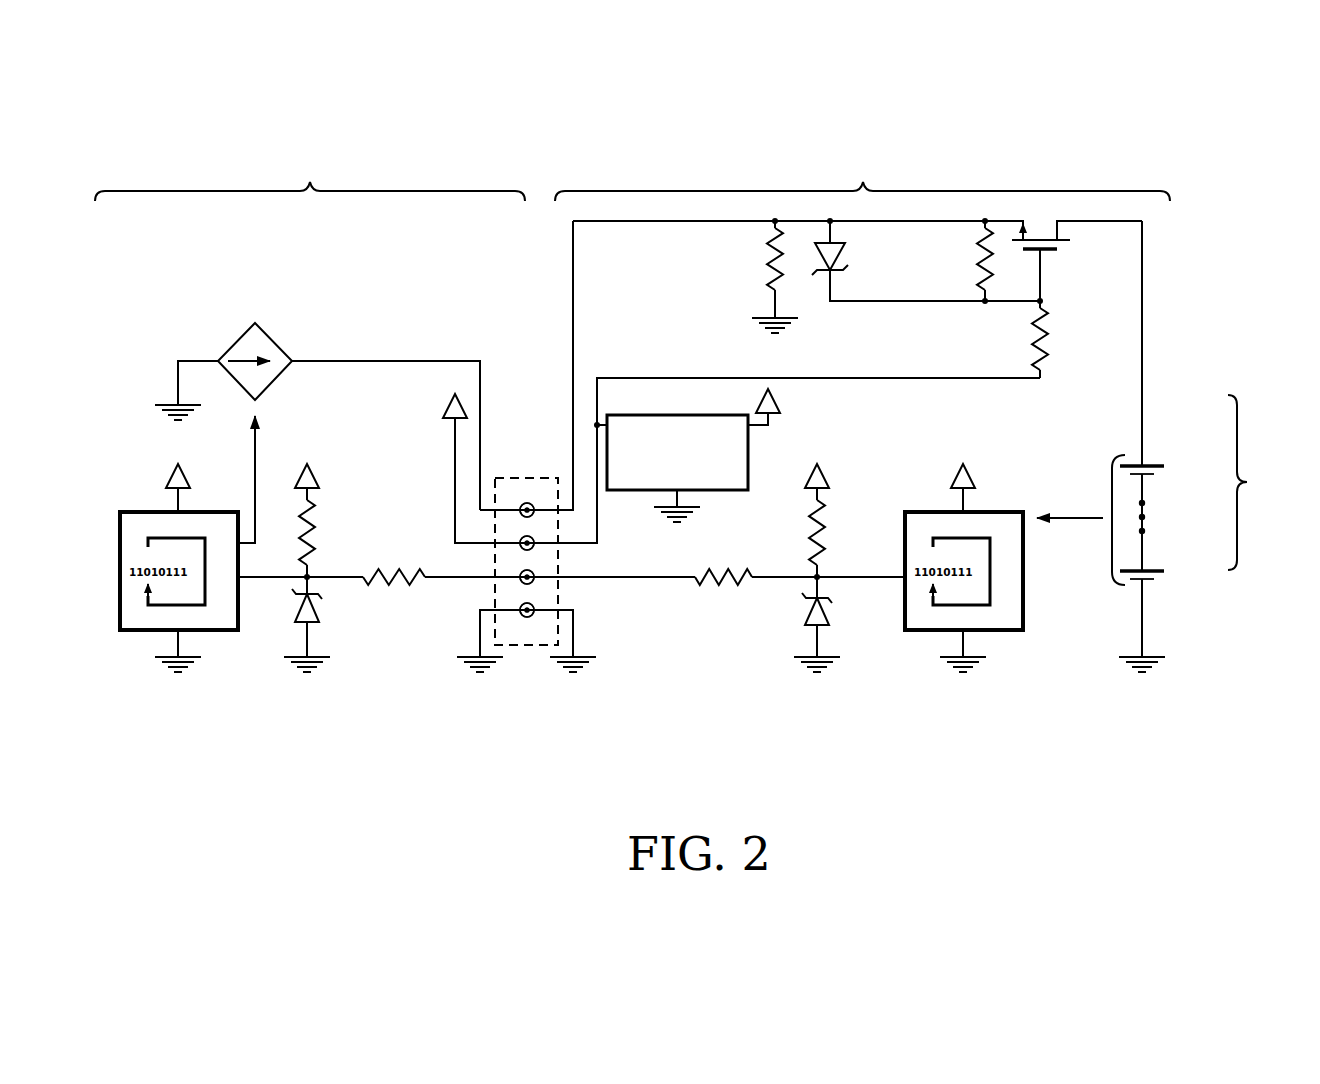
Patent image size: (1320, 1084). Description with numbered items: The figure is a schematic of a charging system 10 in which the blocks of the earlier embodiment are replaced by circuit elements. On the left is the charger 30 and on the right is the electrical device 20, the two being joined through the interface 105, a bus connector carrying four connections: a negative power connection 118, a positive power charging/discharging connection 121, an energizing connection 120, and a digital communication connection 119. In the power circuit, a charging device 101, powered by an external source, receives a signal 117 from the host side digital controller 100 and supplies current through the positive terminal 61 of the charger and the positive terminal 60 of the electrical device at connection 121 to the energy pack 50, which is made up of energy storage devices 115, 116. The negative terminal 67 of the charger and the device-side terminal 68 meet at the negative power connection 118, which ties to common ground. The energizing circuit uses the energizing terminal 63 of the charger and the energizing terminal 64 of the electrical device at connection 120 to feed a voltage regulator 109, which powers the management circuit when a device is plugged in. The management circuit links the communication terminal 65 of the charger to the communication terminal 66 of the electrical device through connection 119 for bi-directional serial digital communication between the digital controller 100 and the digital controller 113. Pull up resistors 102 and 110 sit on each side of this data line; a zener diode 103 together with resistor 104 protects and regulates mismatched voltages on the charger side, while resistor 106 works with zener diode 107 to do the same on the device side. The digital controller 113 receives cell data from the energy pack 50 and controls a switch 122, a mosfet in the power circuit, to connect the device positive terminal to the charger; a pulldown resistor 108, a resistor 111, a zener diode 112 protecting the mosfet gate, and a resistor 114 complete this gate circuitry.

The charging system 10 is at (418, 718).
The electrical device 20 is at (862, 175).
The charger 30 is at (310, 175).
The energy pack 50 is at (1199, 490).
The positive terminal of the electrical device 60 is at (541, 500).
The positive terminal of the charger 61 is at (513, 500).
The energizing terminal of the charger 63 is at (511, 540).
The energizing terminal of the electrical device 64 is at (548, 545).
The communication terminal of the charger 65 is at (511, 575).
The communication terminal of the electrical device 66 is at (546, 578).
The negative terminal of the charger 67 is at (511, 608).
The connector contact 68 is at (542, 607).
The host side digital controller 100 is at (202, 643).
The charging device 101 is at (292, 329).
The pull up resistor 102 is at (337, 513).
The zener diode 103 is at (337, 631).
The resistor 104 is at (388, 602).
The interface 105 is at (527, 415).
The resistor 106 is at (718, 551).
The zener diode 107 is at (792, 630).
The pulldown resistor 108 is at (751, 265).
The voltage regulator 109 is at (770, 454).
The pull up resistor 110 is at (846, 512).
The resistor 111 is at (957, 254).
The zener diode 112 is at (864, 264).
The digital controller 113 is at (996, 642).
The resistor 114 is at (1022, 338).
The energy storage device 115 is at (1152, 455).
The energy storage device 116 is at (1152, 561).
The signal 117 is at (270, 441).
The negative power connection 118 is at (529, 618).
The digital communication connection 119 is at (533, 581).
The energizing connection 120 is at (532, 548).
The positive power charging/discharging connection 121 is at (527, 503).
The switch 122 is at (1052, 264).